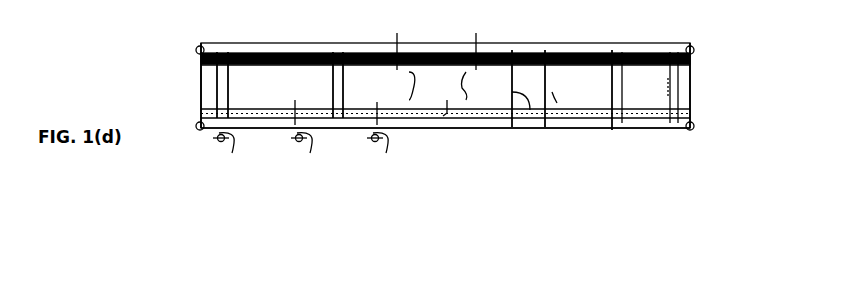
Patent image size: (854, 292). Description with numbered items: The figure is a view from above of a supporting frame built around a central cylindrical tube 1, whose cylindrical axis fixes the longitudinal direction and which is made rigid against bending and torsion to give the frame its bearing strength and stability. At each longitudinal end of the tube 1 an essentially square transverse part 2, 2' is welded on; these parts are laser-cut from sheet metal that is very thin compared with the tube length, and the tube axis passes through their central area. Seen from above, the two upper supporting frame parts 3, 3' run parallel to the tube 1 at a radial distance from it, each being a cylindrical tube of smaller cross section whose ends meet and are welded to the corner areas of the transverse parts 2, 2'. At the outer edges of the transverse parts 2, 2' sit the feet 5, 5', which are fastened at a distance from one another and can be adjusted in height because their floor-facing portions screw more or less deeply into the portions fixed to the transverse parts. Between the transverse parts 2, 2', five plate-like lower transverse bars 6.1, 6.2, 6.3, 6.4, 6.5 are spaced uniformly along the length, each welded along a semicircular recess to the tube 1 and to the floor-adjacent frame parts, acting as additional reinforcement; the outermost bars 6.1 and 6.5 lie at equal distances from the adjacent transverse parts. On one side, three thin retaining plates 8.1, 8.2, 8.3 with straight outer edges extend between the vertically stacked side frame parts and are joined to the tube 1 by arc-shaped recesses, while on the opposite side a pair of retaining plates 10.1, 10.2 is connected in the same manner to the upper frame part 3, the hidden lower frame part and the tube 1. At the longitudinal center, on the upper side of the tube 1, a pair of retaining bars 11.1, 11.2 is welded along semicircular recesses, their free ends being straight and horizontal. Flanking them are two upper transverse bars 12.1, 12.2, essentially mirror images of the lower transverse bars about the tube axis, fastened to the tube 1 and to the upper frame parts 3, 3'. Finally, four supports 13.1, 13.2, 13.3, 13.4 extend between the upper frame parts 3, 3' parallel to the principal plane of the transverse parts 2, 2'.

The central cylindrical tube 1 is at (643, 93).
The transverse part 2 is at (175, 85).
The transverse part 2' is at (727, 85).
The additional supporting frame part 3 is at (445, 32).
The additional supporting frame part 3' is at (445, 163).
The foot 5 is at (453, 33).
The foot 5' is at (443, 162).
The lower transverse bar 6.1 is at (275, 110).
The lower transverse bar 6.2 is at (358, 115).
The lower transverse bar 6.3 is at (445, 115).
The lower transverse bar 6.4 is at (528, 115).
The lower transverse bar 6.5 is at (598, 128).
The retaining plate 8.1 is at (232, 146).
The retaining plate 8.2 is at (311, 148).
The retaining plate 8.3 is at (381, 156).
The retaining plate 10.1 is at (397, 42).
The retaining plate 10.2 is at (476, 42).
The retaining bar 11.1 is at (397, 113).
The retaining bar 11.2 is at (466, 127).
The upper transverse bar 12.1 is at (529, 130).
The upper transverse bar 12.2 is at (553, 125).
The support 13.1 is at (236, 92).
The support 13.2 is at (349, 92).
The support 13.3 is at (602, 91).
The support 13.4 is at (661, 70).